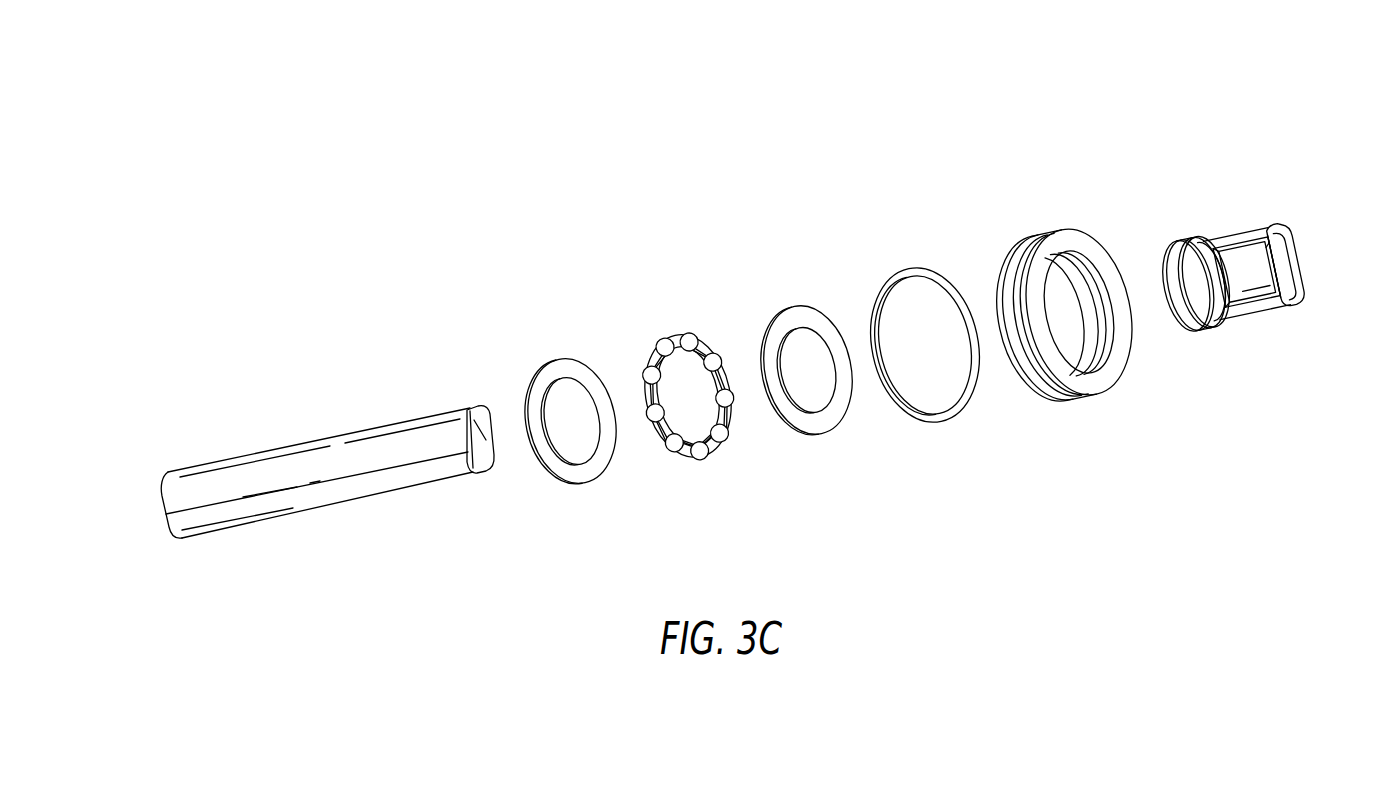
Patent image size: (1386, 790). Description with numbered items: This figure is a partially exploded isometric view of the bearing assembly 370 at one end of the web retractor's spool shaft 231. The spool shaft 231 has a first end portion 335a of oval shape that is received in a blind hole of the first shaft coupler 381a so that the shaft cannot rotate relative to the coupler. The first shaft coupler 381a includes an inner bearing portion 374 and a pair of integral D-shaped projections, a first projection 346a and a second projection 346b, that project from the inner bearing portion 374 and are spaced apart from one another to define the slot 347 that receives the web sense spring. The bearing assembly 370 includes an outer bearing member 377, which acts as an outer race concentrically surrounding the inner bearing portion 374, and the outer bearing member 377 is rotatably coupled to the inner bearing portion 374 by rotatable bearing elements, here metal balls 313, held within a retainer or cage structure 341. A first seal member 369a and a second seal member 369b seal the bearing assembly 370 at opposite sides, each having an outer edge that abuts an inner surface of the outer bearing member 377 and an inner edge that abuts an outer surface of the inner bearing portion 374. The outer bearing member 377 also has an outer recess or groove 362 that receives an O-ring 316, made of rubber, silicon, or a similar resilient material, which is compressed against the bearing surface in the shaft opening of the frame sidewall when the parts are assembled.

The bearing assembly 370 is at (590, 160).
The spool shaft 231 is at (272, 466).
The first end portion 335a is at (478, 424).
The first seal member 369a is at (564, 359).
The cage structure 341 is at (655, 375).
The metal balls 313 is at (705, 350).
The second seal member 369b is at (797, 307).
The O-ring 316 is at (917, 268).
The outer bearing member 377 is at (1077, 233).
The outer groove 362 is at (1026, 358).
The first shaft coupler 381a is at (1184, 242).
The inner bearing portion 374 is at (1194, 322).
The slot 347 is at (1285, 250).
The second projection 346b is at (1289, 264).
The first projection 346a is at (1264, 290).